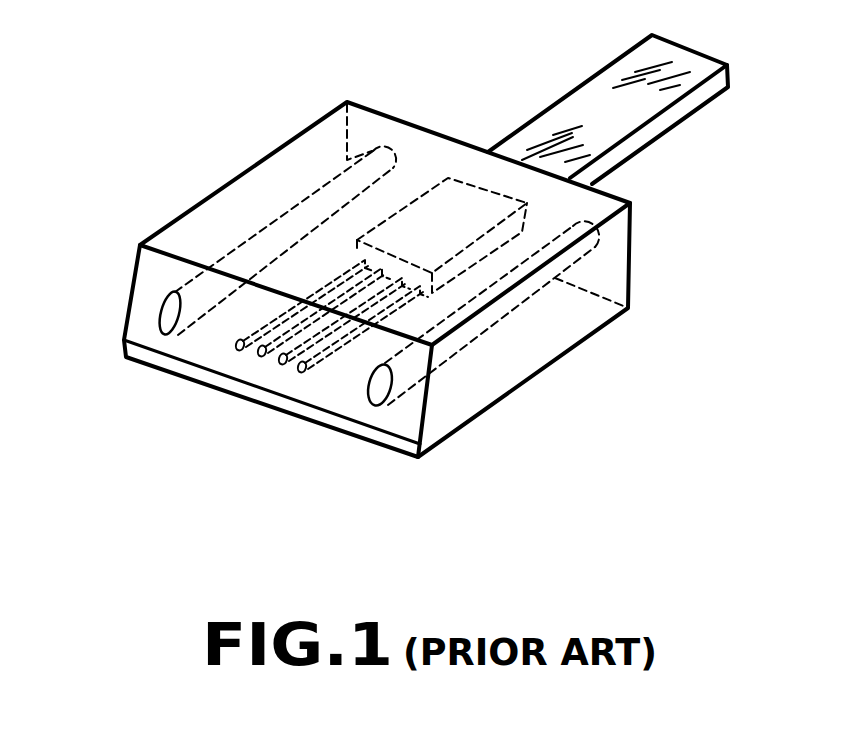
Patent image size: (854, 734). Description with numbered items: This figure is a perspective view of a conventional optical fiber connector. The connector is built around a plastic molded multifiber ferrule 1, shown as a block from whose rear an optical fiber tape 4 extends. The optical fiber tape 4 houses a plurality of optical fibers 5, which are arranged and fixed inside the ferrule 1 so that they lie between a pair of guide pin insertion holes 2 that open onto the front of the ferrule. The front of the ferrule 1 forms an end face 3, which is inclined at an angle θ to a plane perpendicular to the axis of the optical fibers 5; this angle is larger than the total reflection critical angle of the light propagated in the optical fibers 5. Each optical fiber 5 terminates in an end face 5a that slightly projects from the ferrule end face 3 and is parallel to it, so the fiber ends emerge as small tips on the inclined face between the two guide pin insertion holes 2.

The plastic molded multifiber ferrule 1 is at (512, 353).
The guide pin insertion holes 2 is at (160, 316).
The end face of the ferrule 3 is at (333, 390).
The optical fiber tape 4 is at (582, 100).
The optical fibers 5 is at (317, 290).
The end face of the optical fiber 5a is at (303, 367).